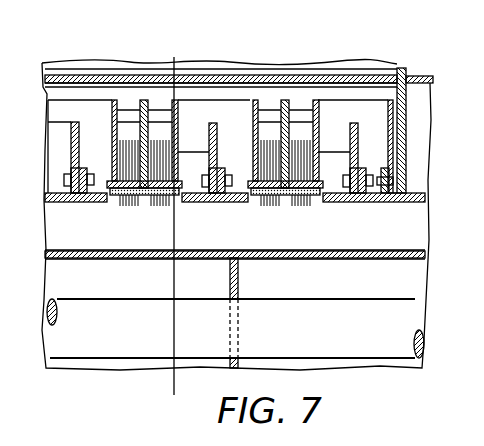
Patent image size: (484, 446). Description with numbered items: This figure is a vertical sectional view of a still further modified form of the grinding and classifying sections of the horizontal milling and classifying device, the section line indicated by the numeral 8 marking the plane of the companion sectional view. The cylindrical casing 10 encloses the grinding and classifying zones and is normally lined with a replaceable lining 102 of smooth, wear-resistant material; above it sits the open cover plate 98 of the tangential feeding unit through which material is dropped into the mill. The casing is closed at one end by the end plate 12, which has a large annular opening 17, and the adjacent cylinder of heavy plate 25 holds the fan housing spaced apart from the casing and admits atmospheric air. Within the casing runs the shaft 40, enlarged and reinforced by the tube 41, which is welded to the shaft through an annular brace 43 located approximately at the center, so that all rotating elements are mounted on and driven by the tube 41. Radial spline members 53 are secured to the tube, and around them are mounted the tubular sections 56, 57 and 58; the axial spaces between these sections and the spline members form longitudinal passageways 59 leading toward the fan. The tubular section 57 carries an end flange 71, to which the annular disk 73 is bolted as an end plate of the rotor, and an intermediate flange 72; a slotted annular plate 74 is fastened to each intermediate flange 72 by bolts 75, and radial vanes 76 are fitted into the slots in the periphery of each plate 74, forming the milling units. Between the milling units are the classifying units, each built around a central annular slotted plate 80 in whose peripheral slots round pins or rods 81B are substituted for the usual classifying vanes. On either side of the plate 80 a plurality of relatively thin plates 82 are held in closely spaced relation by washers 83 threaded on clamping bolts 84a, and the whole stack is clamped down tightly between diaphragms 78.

The section line 8- 8 is at (175, 395).
The cylindrical casing 10 is at (247, 71).
The end plate 12 is at (398, 68).
The annular opening 17 is at (408, 193).
The cylinder of heavy plate 25 is at (425, 76).
The shaft 40 is at (319, 332).
The tube 41 is at (307, 259).
The annular brace 43 is at (238, 281).
The radial spline members 53 is at (88, 246).
The tubular section 56 is at (93, 203).
The tubular section 57 is at (360, 203).
The tubular section 58 is at (410, 203).
The longitudinal passageways 59 is at (117, 259).
The end flange 71 is at (387, 204).
The intermediate flange 72 is at (89, 174).
The annular disk 73 is at (393, 118).
The slotted annular plate 74 is at (70, 158).
The bolts 75 is at (64, 177).
The radial vanes 76 is at (88, 118).
The diaphragms 78 is at (108, 196).
The central annular slotted plate 80 is at (143, 203).
The round pins or rods 81B is at (125, 113).
The thin plates 82 is at (120, 206).
The washers 83 is at (163, 206).
The bolts 84a is at (118, 196).
The cover plate 98 is at (365, 67).
The replaceable lining 102 is at (220, 87).